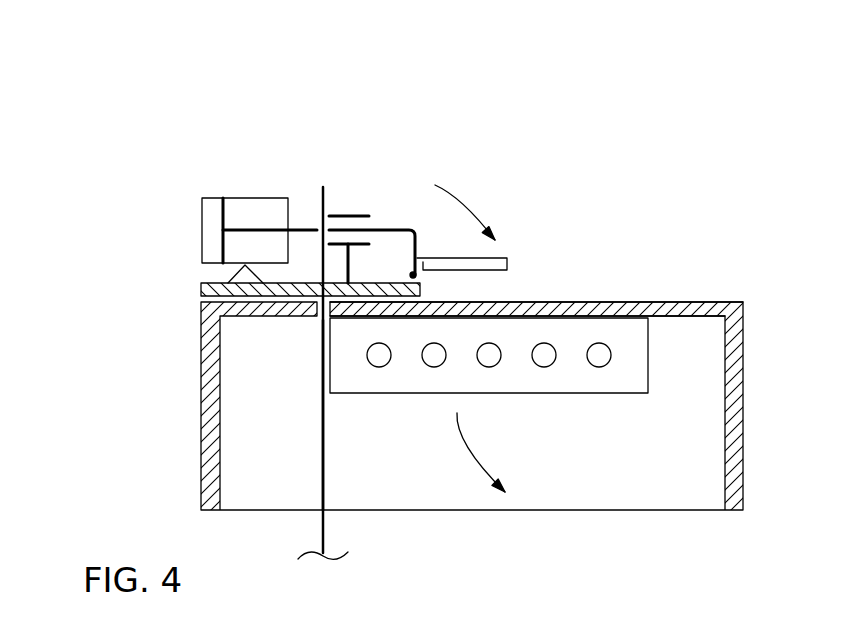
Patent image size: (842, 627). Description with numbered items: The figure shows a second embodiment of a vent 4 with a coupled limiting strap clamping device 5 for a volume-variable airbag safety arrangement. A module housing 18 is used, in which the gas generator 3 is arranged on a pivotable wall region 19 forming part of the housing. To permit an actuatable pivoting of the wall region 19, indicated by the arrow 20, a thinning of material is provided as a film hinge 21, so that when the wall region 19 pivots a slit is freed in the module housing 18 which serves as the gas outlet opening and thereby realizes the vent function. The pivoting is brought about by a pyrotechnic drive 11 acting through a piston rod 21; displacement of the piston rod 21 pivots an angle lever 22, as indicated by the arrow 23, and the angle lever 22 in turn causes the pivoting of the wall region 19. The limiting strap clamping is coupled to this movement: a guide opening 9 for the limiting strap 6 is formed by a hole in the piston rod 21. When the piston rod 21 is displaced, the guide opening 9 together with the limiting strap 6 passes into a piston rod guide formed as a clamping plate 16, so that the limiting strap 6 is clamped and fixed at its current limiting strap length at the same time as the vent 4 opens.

The gas generator 3 is at (603, 380).
The vent 4 is at (587, 195).
The limiting strap clamping device 5 is at (362, 132).
The limiting strap 6 is at (323, 450).
The guide opening 9 is at (320, 190).
The pyrotechnic drive 11 is at (208, 233).
The clamping plate 16 is at (356, 213).
The module housing 18 is at (707, 410).
The pivotable wall region 19 is at (597, 307).
The arrow 20 is at (468, 448).
The piston rod 21 is at (395, 228).
The angle lever 22 is at (498, 257).
The arrow 23 is at (468, 210).